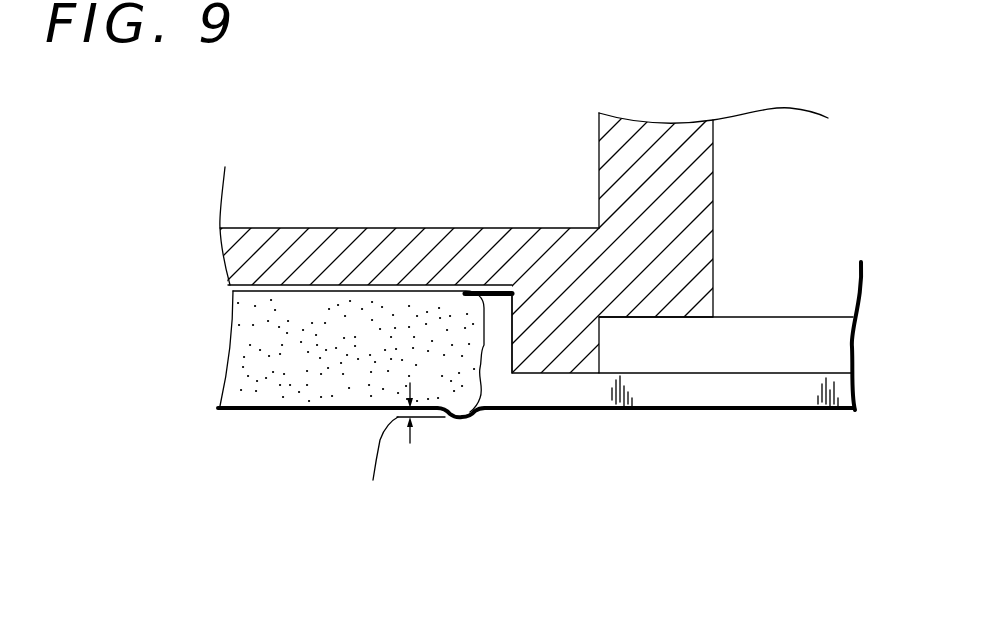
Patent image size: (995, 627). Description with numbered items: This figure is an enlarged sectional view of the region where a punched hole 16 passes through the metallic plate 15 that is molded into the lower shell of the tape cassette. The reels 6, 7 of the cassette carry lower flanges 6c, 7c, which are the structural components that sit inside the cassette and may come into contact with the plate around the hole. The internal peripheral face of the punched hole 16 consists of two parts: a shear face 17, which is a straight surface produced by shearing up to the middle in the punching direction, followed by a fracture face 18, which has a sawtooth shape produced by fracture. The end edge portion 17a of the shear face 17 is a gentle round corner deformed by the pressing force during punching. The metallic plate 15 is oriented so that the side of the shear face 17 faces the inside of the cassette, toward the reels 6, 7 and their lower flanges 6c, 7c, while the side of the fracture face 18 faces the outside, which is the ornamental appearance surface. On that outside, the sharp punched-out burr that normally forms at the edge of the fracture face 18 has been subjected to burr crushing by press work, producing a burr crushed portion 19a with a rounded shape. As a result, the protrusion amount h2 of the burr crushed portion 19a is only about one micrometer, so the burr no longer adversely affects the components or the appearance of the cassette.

The lower flange 6c is at (519, 238).
The lower flange 7c is at (347, 252).
The reel 6 is at (352, 407).
The reel 7 is at (353, 290).
The shear face 17 is at (498, 292).
The end edge portion of the shear face 17a is at (478, 291).
The fracture face 18 is at (488, 388).
The burr crushed portion 19a is at (458, 428).
The protrusion amount of the burr crushed portion h2 is at (400, 448).
The punched hole 16 is at (647, 395).
The metallic plate 15 is at (753, 412).